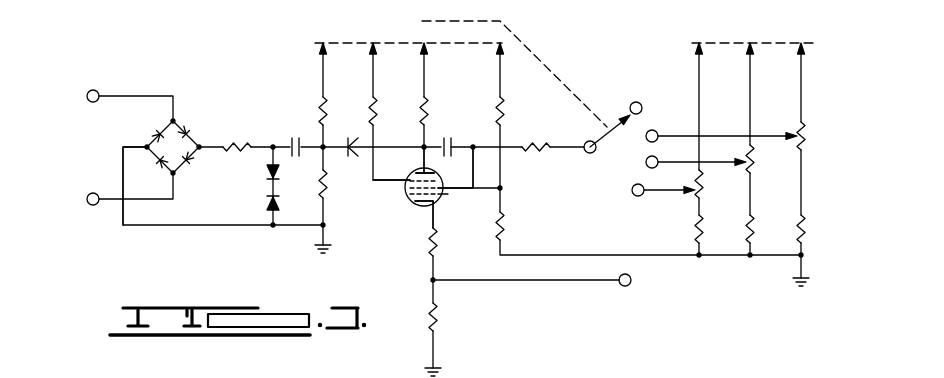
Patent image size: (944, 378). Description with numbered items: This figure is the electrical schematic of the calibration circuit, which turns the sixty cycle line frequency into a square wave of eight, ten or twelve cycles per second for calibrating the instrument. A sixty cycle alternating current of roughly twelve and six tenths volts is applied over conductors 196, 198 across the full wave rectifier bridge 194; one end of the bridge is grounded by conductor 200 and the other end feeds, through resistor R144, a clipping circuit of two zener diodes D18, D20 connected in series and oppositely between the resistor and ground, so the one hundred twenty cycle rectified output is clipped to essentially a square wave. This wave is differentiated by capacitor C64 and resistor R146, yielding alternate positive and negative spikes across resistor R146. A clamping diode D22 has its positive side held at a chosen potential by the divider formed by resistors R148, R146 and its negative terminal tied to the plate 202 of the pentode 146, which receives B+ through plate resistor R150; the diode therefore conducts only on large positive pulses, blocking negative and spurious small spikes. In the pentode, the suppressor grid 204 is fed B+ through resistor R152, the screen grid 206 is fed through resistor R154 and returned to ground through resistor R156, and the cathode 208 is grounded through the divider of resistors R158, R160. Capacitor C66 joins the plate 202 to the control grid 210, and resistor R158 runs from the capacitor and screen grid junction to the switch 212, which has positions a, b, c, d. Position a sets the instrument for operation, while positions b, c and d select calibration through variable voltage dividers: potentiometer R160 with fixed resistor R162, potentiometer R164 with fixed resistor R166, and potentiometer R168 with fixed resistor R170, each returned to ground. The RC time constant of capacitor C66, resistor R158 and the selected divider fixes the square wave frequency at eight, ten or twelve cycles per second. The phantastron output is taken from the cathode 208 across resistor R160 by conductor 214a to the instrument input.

The conductor 196 is at (122, 95).
The conductor 198 is at (110, 197).
The full wave rectifier bridge 194 is at (178, 136).
The conductor 200 is at (140, 131).
The resistor R144 is at (237, 140).
The capacitor C64 is at (300, 137).
The diode D18 is at (265, 170).
The diode D20 is at (265, 202).
The resistor R148 is at (320, 100).
The resistor R146 is at (316, 203).
The diode D22 is at (343, 137).
The resistor R152 is at (395, 87).
The plate resistor R150 is at (427, 103).
The capacitor C66 is at (449, 132).
The pentode 146 is at (411, 203).
The plate 202 is at (422, 163).
The suppressor grid 204 is at (410, 184).
The screen grid 206 is at (445, 186).
The cathode 208 is at (427, 206).
The control grid 210 is at (440, 200).
The resistor R158 is at (430, 248).
The resistor R160 is at (430, 322).
The resistor R154 is at (523, 110).
The resistor R156 is at (503, 227).
The switch 212 is at (615, 120).
The switch position a is at (645, 100).
The switch position b is at (721, 129).
The switch position c is at (696, 154).
The switch position d is at (663, 184).
The conductor 214a is at (538, 280).
The potentiometer R168 is at (697, 198).
The fixed resistor R170 is at (695, 230).
The potentiometer R164 is at (775, 166).
The fixed resistor R166 is at (753, 228).
The fixed resistor R162 is at (798, 232).